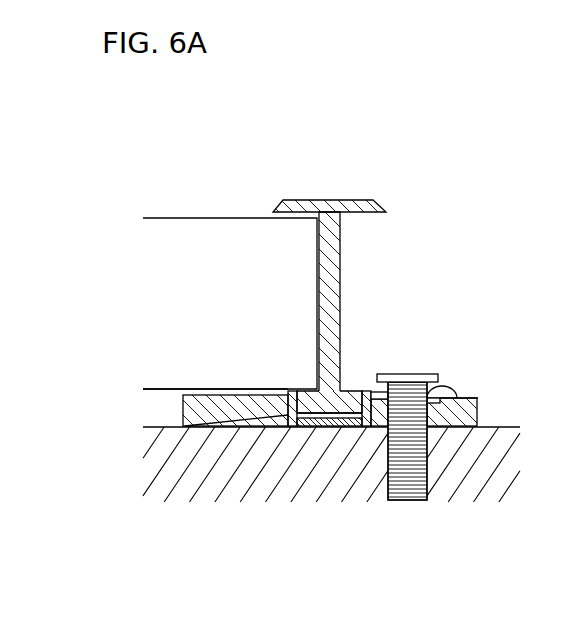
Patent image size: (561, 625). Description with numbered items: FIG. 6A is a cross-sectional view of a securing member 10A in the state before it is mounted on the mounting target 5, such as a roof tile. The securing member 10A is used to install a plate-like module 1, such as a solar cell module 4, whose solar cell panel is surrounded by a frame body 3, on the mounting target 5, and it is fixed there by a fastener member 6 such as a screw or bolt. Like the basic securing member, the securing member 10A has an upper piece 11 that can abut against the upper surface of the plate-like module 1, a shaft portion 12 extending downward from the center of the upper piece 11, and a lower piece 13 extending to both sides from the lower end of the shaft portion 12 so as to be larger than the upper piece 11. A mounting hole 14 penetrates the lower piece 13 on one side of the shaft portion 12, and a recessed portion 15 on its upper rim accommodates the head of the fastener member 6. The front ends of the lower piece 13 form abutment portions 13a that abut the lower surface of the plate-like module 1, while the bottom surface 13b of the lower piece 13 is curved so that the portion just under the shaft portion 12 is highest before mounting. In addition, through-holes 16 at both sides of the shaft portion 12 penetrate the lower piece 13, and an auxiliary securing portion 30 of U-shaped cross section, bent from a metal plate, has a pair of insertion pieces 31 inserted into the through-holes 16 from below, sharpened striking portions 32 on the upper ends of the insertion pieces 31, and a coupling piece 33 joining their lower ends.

The plate-like module 1 is at (304, 267).
The solar cell module 4 is at (318, 267).
The frame body 3 is at (160, 224).
The mounting target 5 is at (158, 427).
The fastener member 6 is at (412, 392).
The securing member 10A is at (323, 267).
The upper piece 11 is at (320, 204).
The shaft portion 12 is at (335, 255).
The lower piece 13 is at (229, 430).
The abutment portion 13a is at (183, 390).
The bottom surface 13b is at (240, 421).
The mounting hole 14 is at (410, 395).
The recessed portion 15 is at (457, 405).
The through-holes 16 is at (270, 390).
The auxiliary securing portion 30 is at (331, 430).
The insertion pieces 31 is at (302, 390).
The striking portions 32 is at (292, 394).
The coupling piece 33 is at (300, 427).